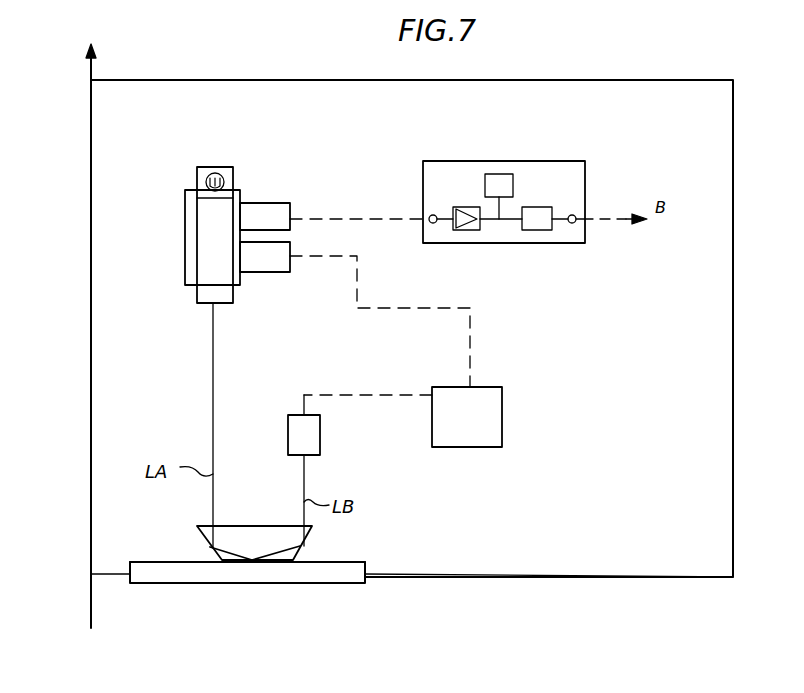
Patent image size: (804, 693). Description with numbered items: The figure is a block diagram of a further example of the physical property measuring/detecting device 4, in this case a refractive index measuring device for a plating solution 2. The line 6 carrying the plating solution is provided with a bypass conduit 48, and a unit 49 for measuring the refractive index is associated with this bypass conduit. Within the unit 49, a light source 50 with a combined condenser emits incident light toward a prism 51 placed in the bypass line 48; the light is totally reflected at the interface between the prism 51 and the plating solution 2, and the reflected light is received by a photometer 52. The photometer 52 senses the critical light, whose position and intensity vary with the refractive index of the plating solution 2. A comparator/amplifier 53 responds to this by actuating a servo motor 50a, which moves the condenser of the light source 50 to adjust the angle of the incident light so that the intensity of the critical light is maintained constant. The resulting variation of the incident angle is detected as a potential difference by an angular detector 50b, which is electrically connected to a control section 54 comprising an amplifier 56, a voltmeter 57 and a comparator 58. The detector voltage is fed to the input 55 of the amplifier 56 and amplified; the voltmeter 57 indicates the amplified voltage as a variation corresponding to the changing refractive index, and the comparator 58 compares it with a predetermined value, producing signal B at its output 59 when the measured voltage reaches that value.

The plating solution 2 is at (253, 575).
The physical property measuring/detecting device 4 is at (352, 108).
The line 6 is at (90, 313).
The bypass conduit 48 is at (338, 585).
The unit 49 is at (180, 195).
The light source 50 is at (211, 270).
The servo motor 50a is at (278, 262).
The angular detector 50b is at (260, 213).
The prism 51 is at (265, 537).
The photometer 52 is at (317, 440).
The comparator/amplifier 53 is at (466, 440).
The control section 54 is at (551, 161).
The input 55 is at (430, 216).
The amplifier 56 is at (476, 232).
The voltmeter 57 is at (498, 183).
The comparator 58 is at (543, 225).
The output 59 is at (576, 215).